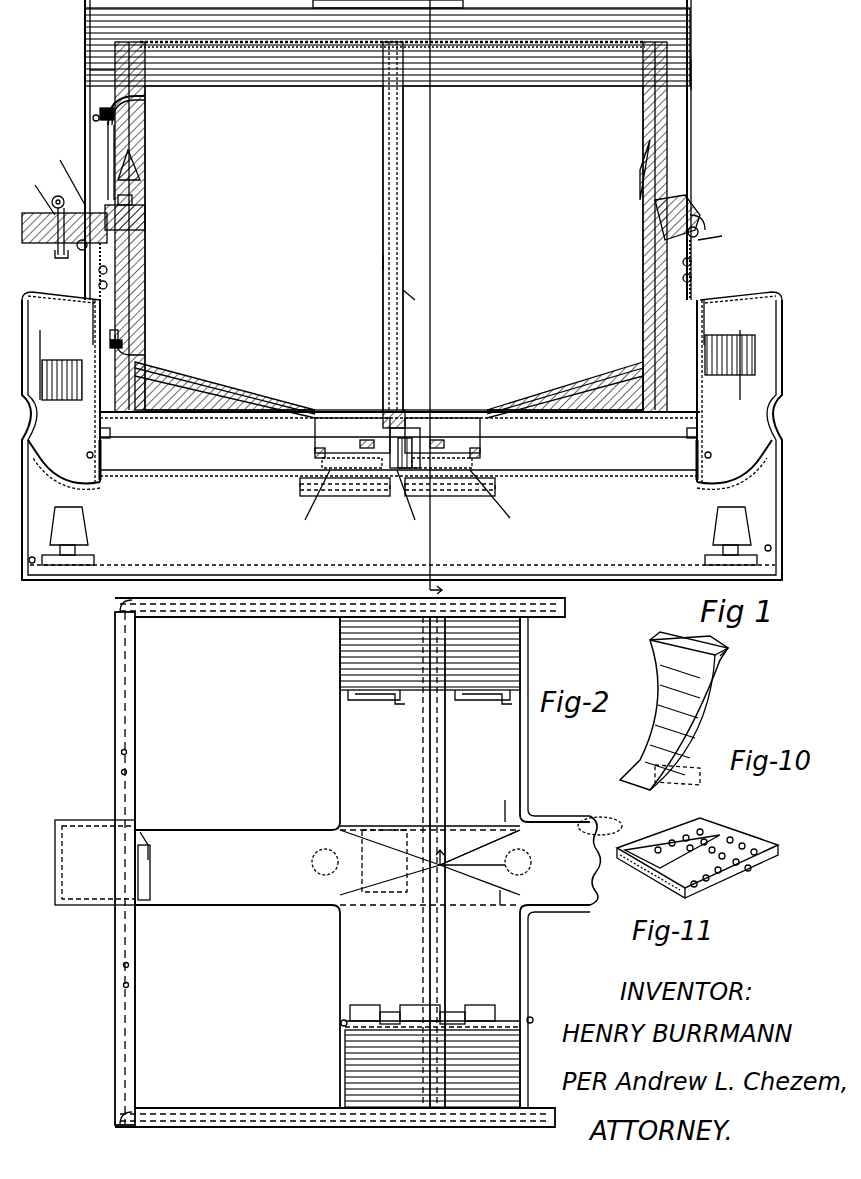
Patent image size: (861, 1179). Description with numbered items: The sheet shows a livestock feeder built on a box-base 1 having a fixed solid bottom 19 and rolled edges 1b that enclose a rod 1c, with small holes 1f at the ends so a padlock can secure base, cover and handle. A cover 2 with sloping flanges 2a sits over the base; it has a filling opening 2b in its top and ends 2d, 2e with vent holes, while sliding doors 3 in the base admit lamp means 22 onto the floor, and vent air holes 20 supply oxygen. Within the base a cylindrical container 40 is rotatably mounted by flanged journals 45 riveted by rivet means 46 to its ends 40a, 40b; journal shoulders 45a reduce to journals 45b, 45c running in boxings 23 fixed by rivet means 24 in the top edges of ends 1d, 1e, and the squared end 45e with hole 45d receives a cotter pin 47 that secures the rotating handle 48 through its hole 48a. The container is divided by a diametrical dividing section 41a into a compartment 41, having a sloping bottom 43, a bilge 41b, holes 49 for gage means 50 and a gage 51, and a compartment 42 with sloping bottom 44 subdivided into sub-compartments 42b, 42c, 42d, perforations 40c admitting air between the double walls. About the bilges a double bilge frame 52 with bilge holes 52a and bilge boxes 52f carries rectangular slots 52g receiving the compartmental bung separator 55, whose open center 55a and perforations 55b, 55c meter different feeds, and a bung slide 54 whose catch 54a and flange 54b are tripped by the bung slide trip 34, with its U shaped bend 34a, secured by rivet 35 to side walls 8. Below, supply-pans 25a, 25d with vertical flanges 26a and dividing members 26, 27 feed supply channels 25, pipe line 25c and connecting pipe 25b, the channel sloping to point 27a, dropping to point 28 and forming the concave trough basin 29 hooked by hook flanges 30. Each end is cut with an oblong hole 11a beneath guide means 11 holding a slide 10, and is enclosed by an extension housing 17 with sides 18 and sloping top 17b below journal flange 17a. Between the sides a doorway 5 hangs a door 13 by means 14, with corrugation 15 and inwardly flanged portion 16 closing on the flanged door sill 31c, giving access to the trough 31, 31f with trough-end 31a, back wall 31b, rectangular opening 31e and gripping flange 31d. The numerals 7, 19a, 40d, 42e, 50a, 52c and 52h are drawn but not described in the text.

In FIG. 1, the box-base 1 is at (402, 440).
In FIG. 2, the box-base 1 is at (340, 862).
In FIG. 1, the rolled edges 1b is at (721, 235).
In FIG. 1, the rod 1c is at (700, 230).
In FIG. 2, the rod 1c is at (118, 610).
In FIG. 1, the end of box-base 1d is at (688, 391).
In FIG. 1, the end of box-base 1e is at (100, 370).
In FIG. 2, the end of box-base 1e is at (137, 735).
In FIG. 2, the holes 1f is at (121, 753).
In FIG. 1, the cover 2 is at (690, 2).
In FIG. 1, the sloping flanges 2a is at (707, 210).
In FIG. 1, the opening 2b is at (339, 21).
In FIG. 1, the end of cover 2d is at (693, 70).
In FIG. 1, the end of cover 2e is at (88, 70).
In FIG. 1, the sliding doors 3 is at (442, 299).
In FIG. 1, the doorway 5 is at (398, 367).
In FIG. 2, the end panel 7 is at (430, 862).
In FIG. 2, the side walls 8 is at (530, 963).
In FIG. 1, the slide 10 is at (398, 421).
In FIG. 2, the slide 10 is at (430, 704).
In FIG. 1, the guide means 11 is at (398, 457).
In FIG. 1, the oblong hole 11a is at (700, 508).
In FIG. 1, the door 13 is at (423, 360).
In FIG. 1, the hanging means 14 is at (421, 306).
In FIG. 1, the corrugation 15 is at (40, 418).
In FIG. 1, the inwardly flanged portion 16 is at (795, 423).
In FIG. 1, the extension housing 17 is at (411, 328).
In FIG. 1, the journal flange 17a is at (431, 299).
In FIG. 1, the top of extension housing 17b is at (411, 286).
In FIG. 2, the top of extension housing 17b is at (95, 862).
In FIG. 1, the sides of extension housing 18 is at (402, 320).
In FIG. 2, the sides of extension housing 18 is at (496, 867).
In FIG. 1, the bottom 19 is at (479, 547).
In FIG. 1, the bottom space 19a is at (257, 525).
In FIG. 1, the vent air holes 20 is at (399, 552).
In FIG. 1, the lamp means 22 is at (72, 528).
In FIG. 1, the boxings 23 is at (398, 319).
In FIG. 2, the boxings 23 is at (150, 866).
In FIG. 1, the rivet means 24 is at (397, 270).
In FIG. 2, the rivet means 24 is at (150, 838).
In FIG. 1, the supply channel 25 is at (398, 468).
In FIG. 2, the supply channel 25 is at (395, 830).
In FIG. 2, the supply-pan 25a is at (430, 815).
In FIG. 2, the connecting pipe 25b is at (384, 860).
In FIG. 1, the pipe line 25c is at (579, 487).
In FIG. 2, the pipe line 25c is at (600, 860).
In FIG. 2, the supply pan 25d is at (430, 852).
In FIG. 1, the dividing members 26 is at (414, 440).
In FIG. 2, the dividing members 26 is at (428, 735).
In FIG. 1, the vertical flanges 26a is at (413, 503).
In FIG. 2, the vertical flanges 26a is at (493, 855).
In FIG. 1, the dividing member 27 is at (418, 498).
In FIG. 1, the vertical drop point 27a is at (400, 464).
In FIG. 1, the drop bottom point 28 is at (100, 487).
In FIG. 1, the concave trough basin 29 is at (391, 488).
In FIG. 1, the hook flanges 30 is at (421, 453).
In FIG. 1, the trough 31 is at (413, 444).
In FIG. 1, the trough-end 31a is at (402, 448).
In FIG. 1, the back wall 31b is at (399, 471).
In FIG. 1, the flanged door sill 31c is at (805, 438).
In FIG. 1, the flange 31d is at (725, 418).
In FIG. 1, the rectangular opening 31e is at (728, 442).
In FIG. 1, the trough 31f is at (748, 406).
In FIG. 2, the bung slide trip 34 is at (432, 1004).
In FIG. 2, the U shaped bend 34a is at (441, 1005).
In FIG. 2, the rivet 35 is at (545, 1008).
In FIG. 1, the cylindrical container 40 is at (392, 34).
In FIG. 1, the end of container 40a is at (665, 227).
In FIG. 1, the end of container 40b is at (145, 82).
In FIG. 1, the perforations 40c is at (403, 135).
In FIG. 1, the divider rib 40d is at (426, 297).
In FIG. 1, the compartment 41 is at (264, 248).
In FIG. 1, the diametrical dividing section 41a is at (367, 263).
In FIG. 1, the bilge 41b is at (380, 410).
In FIG. 1, the compartment 42 is at (523, 248).
In FIG. 2, the sub-compartment 42b is at (473, 845).
In FIG. 2, the sub-compartment 42c is at (469, 884).
In FIG. 1, the sub-compartment 42d is at (439, 185).
In FIG. 1, the hopper bottom 42e is at (448, 393).
In FIG. 1, the sloping bottom 43 is at (205, 385).
In FIG. 1, the sloping bottom 44 is at (605, 362).
In FIG. 1, the flanged journals 45 is at (140, 195).
In FIG. 1, the journal shoulders 45a is at (132, 200).
In FIG. 1, the journal 45b is at (700, 200).
In FIG. 1, the journal 45c is at (61, 176).
In FIG. 1, the hole 45d is at (32, 193).
In FIG. 1, the squared end 45e is at (43, 261).
In FIG. 1, the rivet means 46 is at (135, 162).
In FIG. 1, the cotter pin 47 is at (61, 265).
In FIG. 1, the rotating handle 48 is at (28, 205).
In FIG. 1, the hole 48a is at (59, 217).
In FIG. 1, the holes 49 is at (116, 112).
In FIG. 1, the gage means 50 is at (108, 104).
In FIG. 1, the hook pin 50a is at (75, 117).
In FIG. 1, the gage 51 is at (106, 162).
In FIG. 1, the double bilge frame 52 is at (315, 424).
In FIG. 1, the bilge holes 52a is at (397, 463).
In FIG. 2, the bilge holes 52a is at (421, 862).
In FIG. 1, the gate tray 52c is at (345, 478).
In FIG. 1, the bilge boxes 52f is at (425, 422).
In FIG. 1, the rectangular slots 52g is at (416, 449).
In FIG. 1, the gate guide 52h is at (420, 438).
In FIG. 10, the bung slide 54 is at (722, 700).
In FIG. 10, the catch 54a is at (707, 783).
In FIG. 10, the flange 54b is at (730, 650).
In FIG. 11, the compartmental bung separator 55 is at (720, 862).
In FIG. 11, the center compartment 55a is at (670, 862).
In FIG. 11, the perforations 55b is at (678, 820).
In FIG. 11, the perforations 55c is at (748, 838).